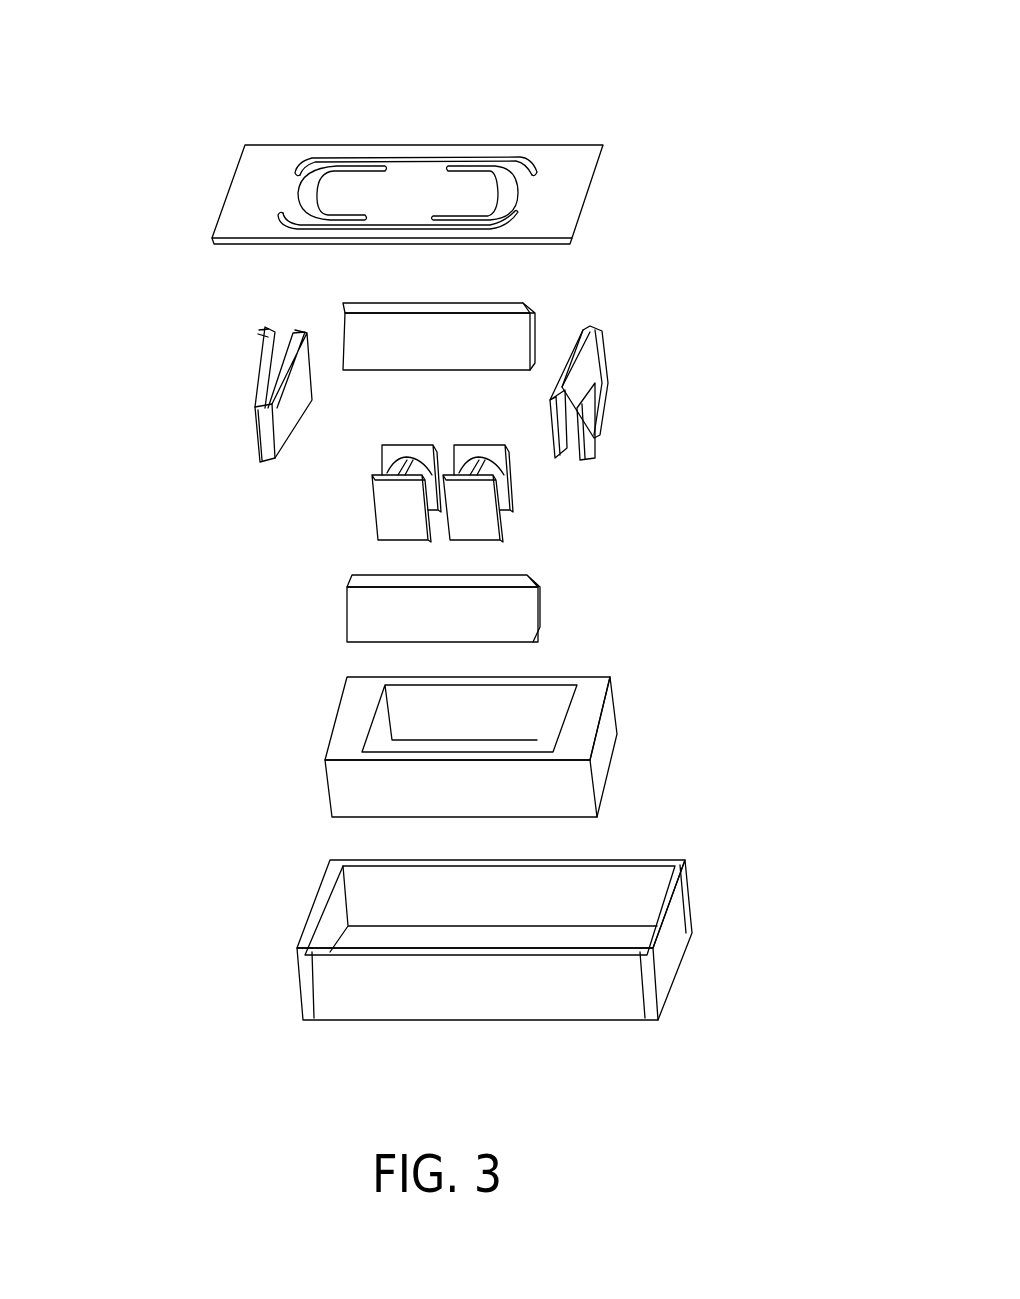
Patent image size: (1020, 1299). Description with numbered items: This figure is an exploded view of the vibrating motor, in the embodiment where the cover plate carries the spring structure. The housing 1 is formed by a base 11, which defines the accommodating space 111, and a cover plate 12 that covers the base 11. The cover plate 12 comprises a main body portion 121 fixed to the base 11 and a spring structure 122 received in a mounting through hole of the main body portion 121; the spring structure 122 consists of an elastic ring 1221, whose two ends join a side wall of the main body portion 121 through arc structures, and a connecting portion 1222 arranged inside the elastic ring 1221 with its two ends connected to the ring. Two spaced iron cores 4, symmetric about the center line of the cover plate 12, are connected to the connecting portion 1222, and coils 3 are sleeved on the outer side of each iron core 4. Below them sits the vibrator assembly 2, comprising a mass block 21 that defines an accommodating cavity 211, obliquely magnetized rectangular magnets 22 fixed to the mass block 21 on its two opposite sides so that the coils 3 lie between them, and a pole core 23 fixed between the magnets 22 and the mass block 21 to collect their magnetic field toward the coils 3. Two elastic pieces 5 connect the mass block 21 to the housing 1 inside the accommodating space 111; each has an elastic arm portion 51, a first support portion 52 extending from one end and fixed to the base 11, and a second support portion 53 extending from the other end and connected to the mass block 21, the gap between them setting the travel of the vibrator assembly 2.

The housing 1 is at (442, 940).
The base 11 is at (683, 902).
The accommodating space 111 is at (352, 945).
The cover plate 12 is at (243, 193).
The main body portion 121 is at (565, 192).
The spring structure 122 is at (557, 50).
The elastic ring 1221 is at (515, 162).
The connecting portion 1222 is at (402, 187).
The vibrator assembly 2 is at (435, 676).
The mass block 21 is at (343, 720).
The accommodating cavity 211 is at (540, 747).
The magnets 22 is at (357, 580).
The pole core 23 is at (357, 627).
The coils 3 is at (498, 494).
The iron cores 4 is at (382, 495).
The elastic pieces 5 is at (416, 378).
The elastic arm portion 51 is at (260, 420).
The first support portion 52 is at (258, 352).
The second support portion 53 is at (260, 387).